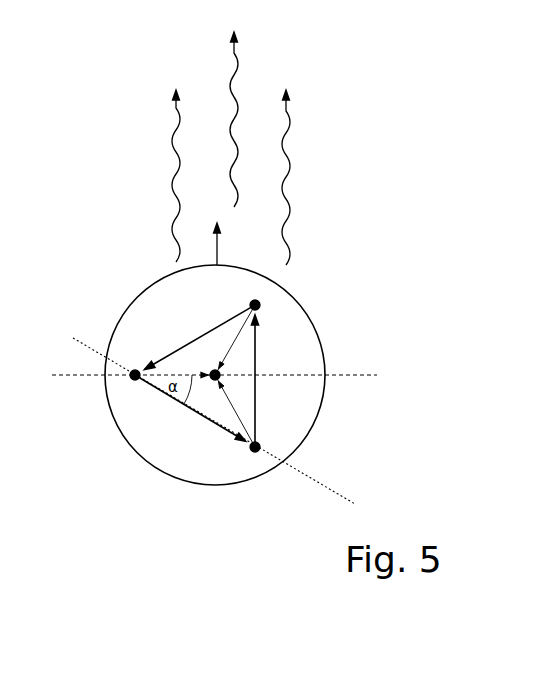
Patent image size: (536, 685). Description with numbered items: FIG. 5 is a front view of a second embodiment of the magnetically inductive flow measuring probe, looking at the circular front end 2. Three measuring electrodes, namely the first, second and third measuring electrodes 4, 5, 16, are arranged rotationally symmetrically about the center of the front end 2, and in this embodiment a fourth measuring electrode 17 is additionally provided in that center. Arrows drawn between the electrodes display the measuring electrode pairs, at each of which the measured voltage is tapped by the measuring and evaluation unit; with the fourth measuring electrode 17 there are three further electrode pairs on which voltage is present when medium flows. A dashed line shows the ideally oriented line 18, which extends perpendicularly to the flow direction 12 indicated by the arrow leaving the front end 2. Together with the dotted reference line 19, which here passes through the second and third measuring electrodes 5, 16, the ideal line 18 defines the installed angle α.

The front end 2 is at (133, 333).
The first measuring electrode 4 is at (262, 304).
The second measuring electrode 5 is at (133, 377).
The flow direction 12 is at (217, 247).
The third measuring electrode 16 is at (290, 453).
The fourth measuring electrode 17 is at (212, 381).
The ideally oriented line 18 is at (360, 375).
The reference line 19 is at (320, 486).